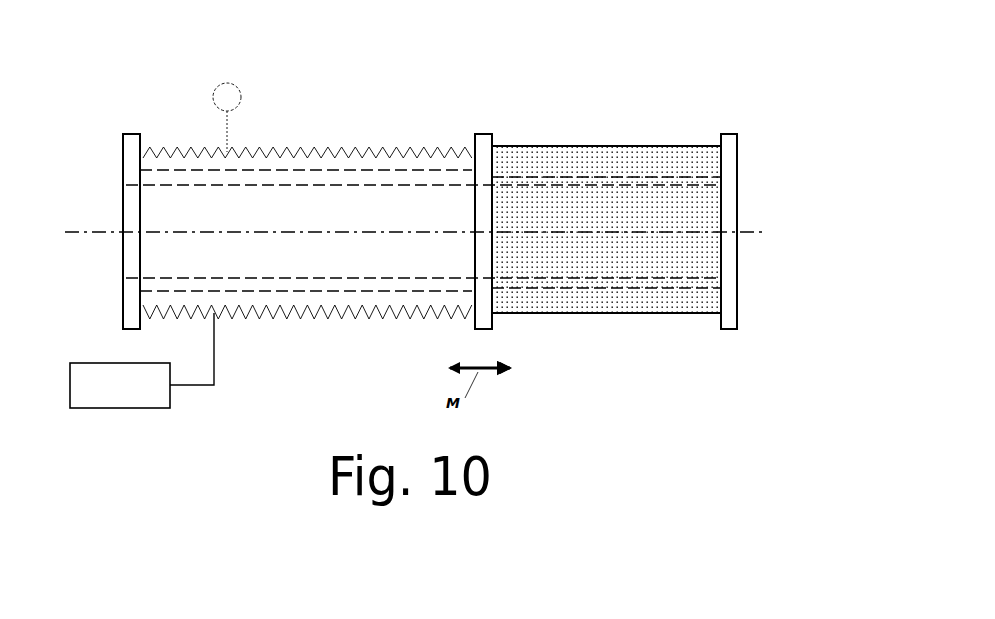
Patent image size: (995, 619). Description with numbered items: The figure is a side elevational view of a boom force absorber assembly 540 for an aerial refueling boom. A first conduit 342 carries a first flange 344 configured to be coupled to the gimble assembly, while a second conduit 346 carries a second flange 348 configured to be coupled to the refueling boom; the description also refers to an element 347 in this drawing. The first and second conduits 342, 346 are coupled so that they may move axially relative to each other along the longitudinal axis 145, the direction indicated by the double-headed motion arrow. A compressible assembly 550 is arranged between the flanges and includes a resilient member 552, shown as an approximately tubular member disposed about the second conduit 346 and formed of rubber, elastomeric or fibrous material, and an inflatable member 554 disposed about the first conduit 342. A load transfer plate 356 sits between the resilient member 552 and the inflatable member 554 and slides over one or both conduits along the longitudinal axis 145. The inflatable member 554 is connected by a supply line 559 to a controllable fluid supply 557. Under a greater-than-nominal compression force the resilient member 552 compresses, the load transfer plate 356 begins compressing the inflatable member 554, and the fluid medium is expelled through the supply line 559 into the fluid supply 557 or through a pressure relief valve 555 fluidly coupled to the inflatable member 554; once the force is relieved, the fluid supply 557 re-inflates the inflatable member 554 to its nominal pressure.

The longitudinal axis 145 is at (103, 230).
The boom force absorber assembly 540 is at (172, 74).
The first flange 344 is at (120, 119).
The inflatable member 554 is at (318, 318).
The first conduit 342 is at (288, 167).
The inner rod 347 is at (353, 184).
The load transfer plate 356 is at (479, 132).
The second conduit 346 is at (544, 174).
The second flange 348 is at (736, 121).
The resilient member 552 is at (614, 314).
The compressible assembly 550 is at (663, 393).
The pressure relief valve 555 is at (241, 89).
The controllable fluid supply 557 is at (130, 410).
The supply line 559 is at (205, 387).